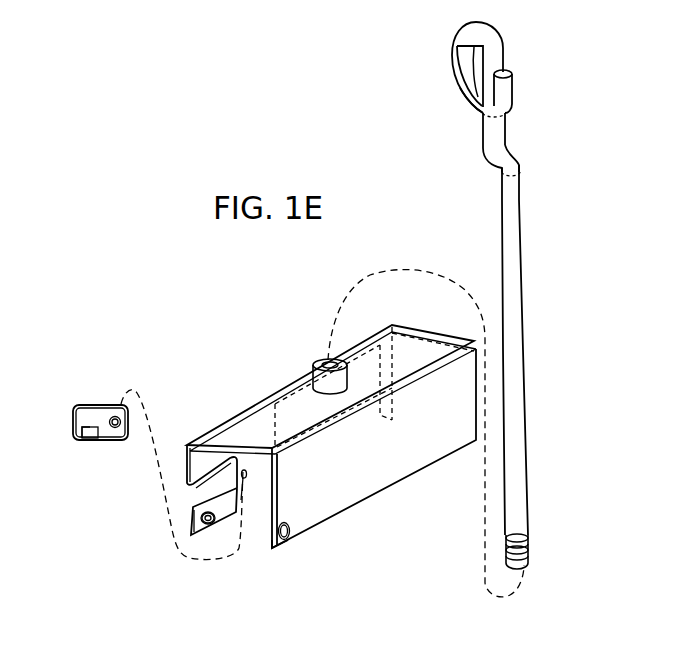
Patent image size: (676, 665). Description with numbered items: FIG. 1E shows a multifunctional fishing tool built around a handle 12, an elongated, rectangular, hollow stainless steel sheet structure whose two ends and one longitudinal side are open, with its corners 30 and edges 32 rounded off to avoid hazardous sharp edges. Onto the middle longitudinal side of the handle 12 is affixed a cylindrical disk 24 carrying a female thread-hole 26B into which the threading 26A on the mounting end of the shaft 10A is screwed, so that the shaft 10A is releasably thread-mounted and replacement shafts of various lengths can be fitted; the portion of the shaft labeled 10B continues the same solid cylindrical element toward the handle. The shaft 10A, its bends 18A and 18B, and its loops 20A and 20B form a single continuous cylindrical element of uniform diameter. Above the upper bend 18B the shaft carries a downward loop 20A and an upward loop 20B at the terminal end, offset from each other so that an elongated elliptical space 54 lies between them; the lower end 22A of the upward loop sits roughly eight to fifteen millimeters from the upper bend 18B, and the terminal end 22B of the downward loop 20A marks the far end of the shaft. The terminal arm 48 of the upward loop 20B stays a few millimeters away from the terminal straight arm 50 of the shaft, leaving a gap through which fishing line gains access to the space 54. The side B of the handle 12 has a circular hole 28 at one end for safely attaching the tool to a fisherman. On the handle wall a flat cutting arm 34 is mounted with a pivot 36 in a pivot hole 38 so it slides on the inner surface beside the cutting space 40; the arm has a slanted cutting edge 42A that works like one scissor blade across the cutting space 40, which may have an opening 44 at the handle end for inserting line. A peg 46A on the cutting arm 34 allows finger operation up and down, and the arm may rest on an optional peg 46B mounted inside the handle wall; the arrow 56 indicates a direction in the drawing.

The shaft 10A is at (508, 224).
The lower shank portion of hook rod 10B is at (515, 423).
The handle 12 is at (207, 346).
The bend 18A is at (500, 172).
The upper bend 18B is at (506, 151).
The downward loop 20A is at (457, 47).
The upward loop 20B is at (498, 102).
The lower end of the upward loop 22A is at (483, 111).
The terminal end of the downward loop 22B is at (458, 23).
The cylindrical disk 24 is at (311, 363).
The threading 26A is at (530, 545).
The female thread-hole 26B is at (323, 361).
The circular hole 28 is at (289, 533).
The corners 30 is at (276, 548).
The edges 32 is at (427, 462).
The cutting arm 34 is at (88, 398).
The pivot 36 is at (116, 427).
The pivot hole 38 is at (243, 478).
The cutting space 40 is at (215, 480).
The slanted cutting edge 42A is at (98, 442).
The opening 44 is at (192, 493).
The peg 46A is at (82, 440).
The peg 46B is at (210, 521).
The terminal arm 48 is at (513, 79).
The terminal straight arm 50 is at (489, 63).
The elliptical space 54 is at (477, 61).
The direction arrow 56 is at (326, 93).
The side B is at (378, 463).